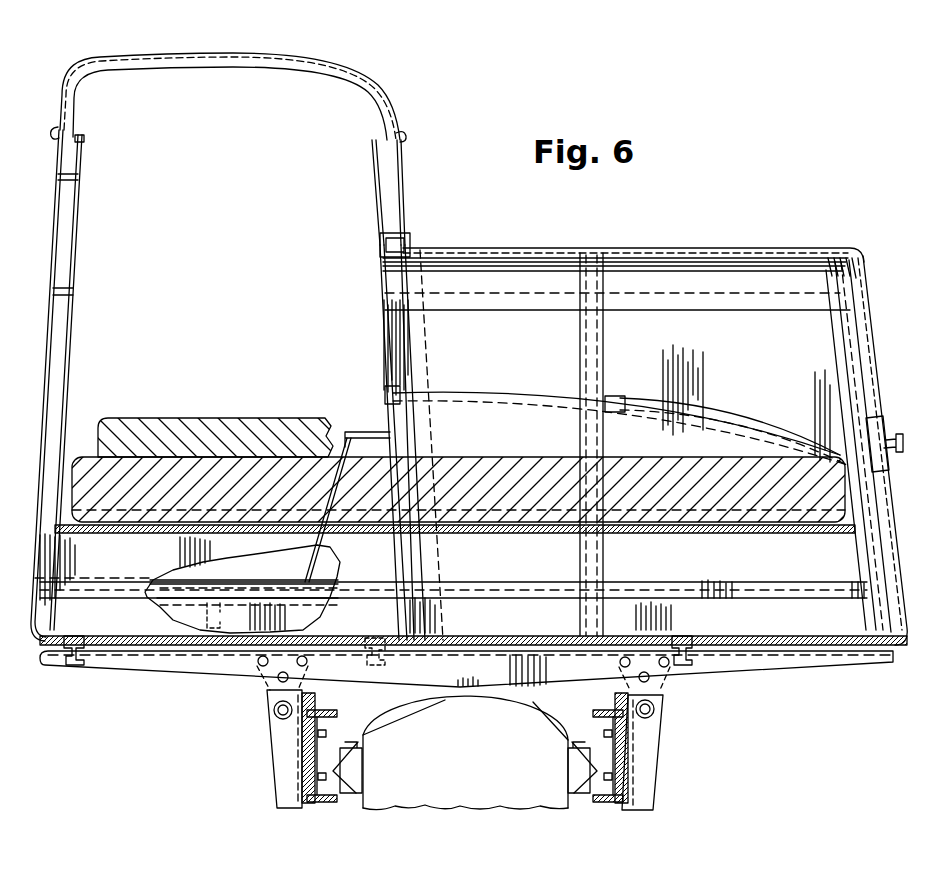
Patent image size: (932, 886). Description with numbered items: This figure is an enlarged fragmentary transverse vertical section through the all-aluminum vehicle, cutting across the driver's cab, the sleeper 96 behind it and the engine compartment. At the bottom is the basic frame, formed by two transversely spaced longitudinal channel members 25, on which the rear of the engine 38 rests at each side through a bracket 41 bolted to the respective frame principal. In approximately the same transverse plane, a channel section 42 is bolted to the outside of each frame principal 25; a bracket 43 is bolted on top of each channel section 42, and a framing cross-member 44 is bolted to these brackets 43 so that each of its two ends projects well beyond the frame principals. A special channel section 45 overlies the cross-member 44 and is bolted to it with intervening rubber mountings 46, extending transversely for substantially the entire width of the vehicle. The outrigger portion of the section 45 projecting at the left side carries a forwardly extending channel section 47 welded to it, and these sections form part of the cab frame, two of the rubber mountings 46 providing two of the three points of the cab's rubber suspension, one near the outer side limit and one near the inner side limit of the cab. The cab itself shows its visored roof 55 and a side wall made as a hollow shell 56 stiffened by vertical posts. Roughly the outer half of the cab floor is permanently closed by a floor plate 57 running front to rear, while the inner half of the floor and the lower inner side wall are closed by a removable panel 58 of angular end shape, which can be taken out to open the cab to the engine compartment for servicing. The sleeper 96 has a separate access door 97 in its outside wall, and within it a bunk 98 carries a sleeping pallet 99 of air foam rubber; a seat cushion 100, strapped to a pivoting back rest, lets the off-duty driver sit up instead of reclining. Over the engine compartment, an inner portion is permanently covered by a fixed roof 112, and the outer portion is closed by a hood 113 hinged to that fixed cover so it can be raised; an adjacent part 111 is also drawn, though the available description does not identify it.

The longitudinal channel member 25 is at (337, 712).
The engine 38 is at (552, 715).
The bracket 41 is at (334, 771).
The channel section 42 is at (287, 758).
The bracket 43 is at (306, 690).
The framing cross-member 44 is at (766, 668).
The special channel section 45 is at (788, 586).
The rubber mounting 46 is at (82, 650).
The forwardly extending channel section 47 is at (208, 617).
The visored roof 55 is at (247, 58).
The hollow shell 56 is at (50, 352).
The floor plate 57 is at (126, 579).
The removable panel 58 is at (343, 432).
The sleeper 96 is at (692, 241).
The access door 97 is at (878, 368).
The bunk 98 is at (140, 530).
The sleeping pallet 99 is at (82, 482).
The seat cushion 100 is at (244, 417).
The link rod 111 is at (750, 432).
The fixed roof 112 is at (508, 394).
The hood 113 is at (735, 412).